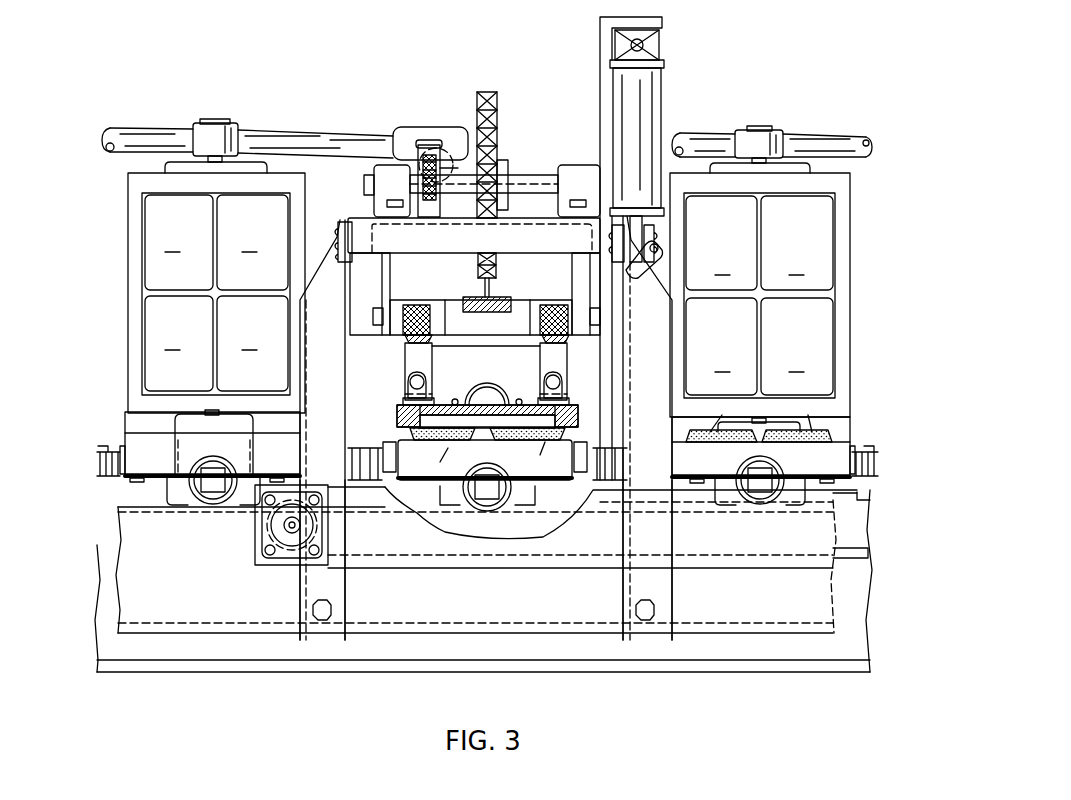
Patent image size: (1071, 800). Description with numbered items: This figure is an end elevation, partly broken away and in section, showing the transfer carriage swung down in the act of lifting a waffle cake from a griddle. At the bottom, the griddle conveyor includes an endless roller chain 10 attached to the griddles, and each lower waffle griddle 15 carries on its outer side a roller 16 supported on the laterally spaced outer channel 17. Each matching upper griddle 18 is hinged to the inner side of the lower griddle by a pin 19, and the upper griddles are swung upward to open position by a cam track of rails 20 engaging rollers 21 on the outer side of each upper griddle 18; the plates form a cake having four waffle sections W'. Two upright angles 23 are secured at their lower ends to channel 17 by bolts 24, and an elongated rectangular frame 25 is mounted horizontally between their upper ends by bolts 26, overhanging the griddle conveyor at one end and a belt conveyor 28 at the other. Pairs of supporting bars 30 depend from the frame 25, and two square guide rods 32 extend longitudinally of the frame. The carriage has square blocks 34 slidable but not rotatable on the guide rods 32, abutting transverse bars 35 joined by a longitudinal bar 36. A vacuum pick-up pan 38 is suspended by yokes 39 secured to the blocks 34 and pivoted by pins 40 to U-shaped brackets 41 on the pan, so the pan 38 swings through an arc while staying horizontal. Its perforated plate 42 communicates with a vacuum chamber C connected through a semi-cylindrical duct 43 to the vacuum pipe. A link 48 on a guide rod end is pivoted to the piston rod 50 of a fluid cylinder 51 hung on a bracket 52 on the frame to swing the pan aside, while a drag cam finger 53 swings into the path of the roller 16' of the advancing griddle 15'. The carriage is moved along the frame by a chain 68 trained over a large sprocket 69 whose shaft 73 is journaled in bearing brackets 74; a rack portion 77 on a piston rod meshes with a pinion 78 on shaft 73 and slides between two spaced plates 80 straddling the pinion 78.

The endless roller chain 10 is at (103, 444).
The lower waffle griddle 15 is at (487, 475).
The advancing griddle 15' is at (487, 472).
The roller 16 is at (503, 493).
The roller of advancing griddle 16' is at (496, 498).
The outer channel 17 is at (238, 615).
The upper griddle 18 is at (296, 191).
The pin 19 is at (850, 446).
The rails 20 is at (287, 130).
The rollers 21 is at (232, 128).
The upright angles 23 is at (338, 387).
The bolts 24 is at (313, 609).
The rectangular frame 25 is at (356, 216).
The bolts 26 is at (338, 240).
The belt conveyor 28 is at (850, 497).
The supporting bars 30 is at (388, 265).
The guide rods 32 is at (430, 322).
The square blocks 34 is at (430, 338).
The transverse bars 35 is at (505, 336).
The longitudinal bar 36 is at (474, 312).
The vacuum pick-up pan 38 is at (578, 420).
The yokes 39 is at (405, 368).
The pins 40 is at (410, 386).
The U-shaped brackets 41 is at (408, 401).
The perforated plate 42 is at (510, 441).
The semi-cylindrical duct 43 is at (498, 389).
The link 48 is at (641, 272).
The piston rod 50 is at (645, 225).
The fluid cylinder 51 is at (648, 107).
The bracket 52 is at (603, 74).
The drag cam finger 53 is at (455, 483).
The chain 68 is at (498, 97).
The large sprocket 69 is at (505, 167).
The sprocket shaft 73 is at (525, 184).
The bearing brackets 74 is at (391, 170).
The rack portion 77 is at (438, 170).
The pinion 78 is at (425, 190).
The spaced plates 80 is at (418, 145).
The waffle sections W' is at (631, 437).
The vacuum chamber C is at (465, 440).